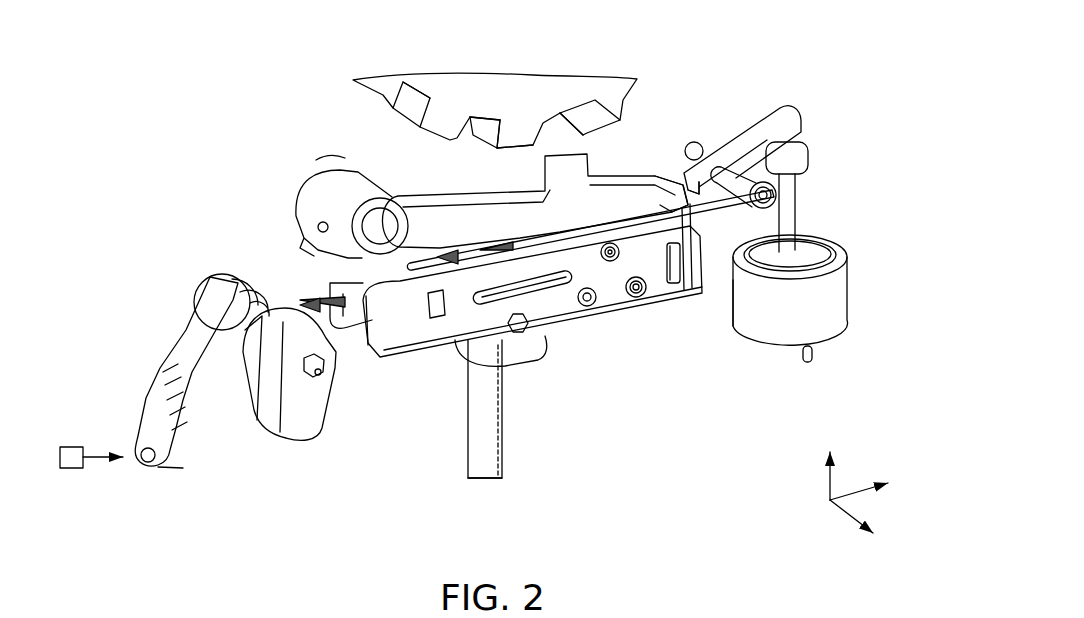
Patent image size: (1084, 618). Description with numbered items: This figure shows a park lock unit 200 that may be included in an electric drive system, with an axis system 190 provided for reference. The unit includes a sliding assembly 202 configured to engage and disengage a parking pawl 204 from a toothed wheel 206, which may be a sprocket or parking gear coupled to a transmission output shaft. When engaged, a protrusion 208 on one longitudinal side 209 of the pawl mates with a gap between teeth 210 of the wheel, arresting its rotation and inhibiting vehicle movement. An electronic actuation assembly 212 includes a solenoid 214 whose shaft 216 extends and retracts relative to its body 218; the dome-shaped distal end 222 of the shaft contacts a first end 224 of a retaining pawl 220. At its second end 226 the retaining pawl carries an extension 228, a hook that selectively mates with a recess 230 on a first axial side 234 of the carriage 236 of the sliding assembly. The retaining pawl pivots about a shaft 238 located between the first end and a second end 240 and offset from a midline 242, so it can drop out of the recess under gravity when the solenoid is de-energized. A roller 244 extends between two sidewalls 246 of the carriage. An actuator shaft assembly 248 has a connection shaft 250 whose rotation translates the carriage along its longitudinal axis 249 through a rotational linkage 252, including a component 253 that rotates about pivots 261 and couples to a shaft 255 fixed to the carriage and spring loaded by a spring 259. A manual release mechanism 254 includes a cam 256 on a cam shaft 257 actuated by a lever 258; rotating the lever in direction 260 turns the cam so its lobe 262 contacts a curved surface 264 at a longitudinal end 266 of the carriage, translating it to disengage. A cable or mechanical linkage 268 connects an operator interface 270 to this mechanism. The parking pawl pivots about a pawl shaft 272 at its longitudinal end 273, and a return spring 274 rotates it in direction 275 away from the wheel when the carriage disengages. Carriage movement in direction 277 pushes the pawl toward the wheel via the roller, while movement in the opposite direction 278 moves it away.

The axis system 190 is at (863, 462).
The park lock unit 200 is at (192, 80).
The sliding assembly 202 is at (658, 305).
The parking pawl 204 is at (410, 175).
The toothed wheel 206 is at (645, 98).
The protrusion 208 is at (543, 157).
The longitudinal side 209 is at (630, 228).
The teeth 210 is at (512, 130).
The electronic actuation assembly 212 is at (897, 188).
The solenoid 214 is at (858, 280).
The shaft 216 is at (787, 210).
The body 218 is at (833, 308).
The retaining pawl 220 is at (757, 97).
The distal end 222 is at (787, 155).
The first end 224 is at (807, 110).
The second end 226 is at (675, 163).
The extension 228 is at (698, 193).
The recess 230 is at (680, 195).
The first axial side 234 is at (752, 222).
The carriage 236 is at (605, 305).
The shaft 238 is at (777, 197).
The second end 240 is at (678, 172).
The midline 242 is at (735, 150).
The roller 244 is at (634, 298).
The sidewalls 246 is at (600, 272).
The actuator shaft assembly 248 is at (505, 437).
The longitudinal axis 249 is at (465, 258).
The connection shaft 250 is at (488, 460).
The rotational linkage 252 is at (430, 397).
The component 253 is at (448, 348).
The manual release mechanism 254 is at (142, 340).
The shaft 255 is at (372, 298).
The cam 256 is at (265, 432).
The cam shaft 257 is at (237, 318).
The lever 258 is at (157, 437).
The spring 259 is at (487, 300).
The direction 260 is at (168, 470).
The pivots 261 is at (532, 330).
The lobe 262 is at (302, 432).
The curved surface 264 is at (370, 380).
The longitudinal end 266 is at (318, 293).
The cable and/or mechanical linkage 268 is at (93, 460).
The operator interface 270 is at (70, 447).
The pawl shaft 272 is at (352, 222).
The longitudinal end 273 is at (295, 228).
The return spring 274 is at (316, 183).
The direction 275 is at (338, 158).
The direction 277 is at (352, 322).
The direction 278 is at (742, 238).